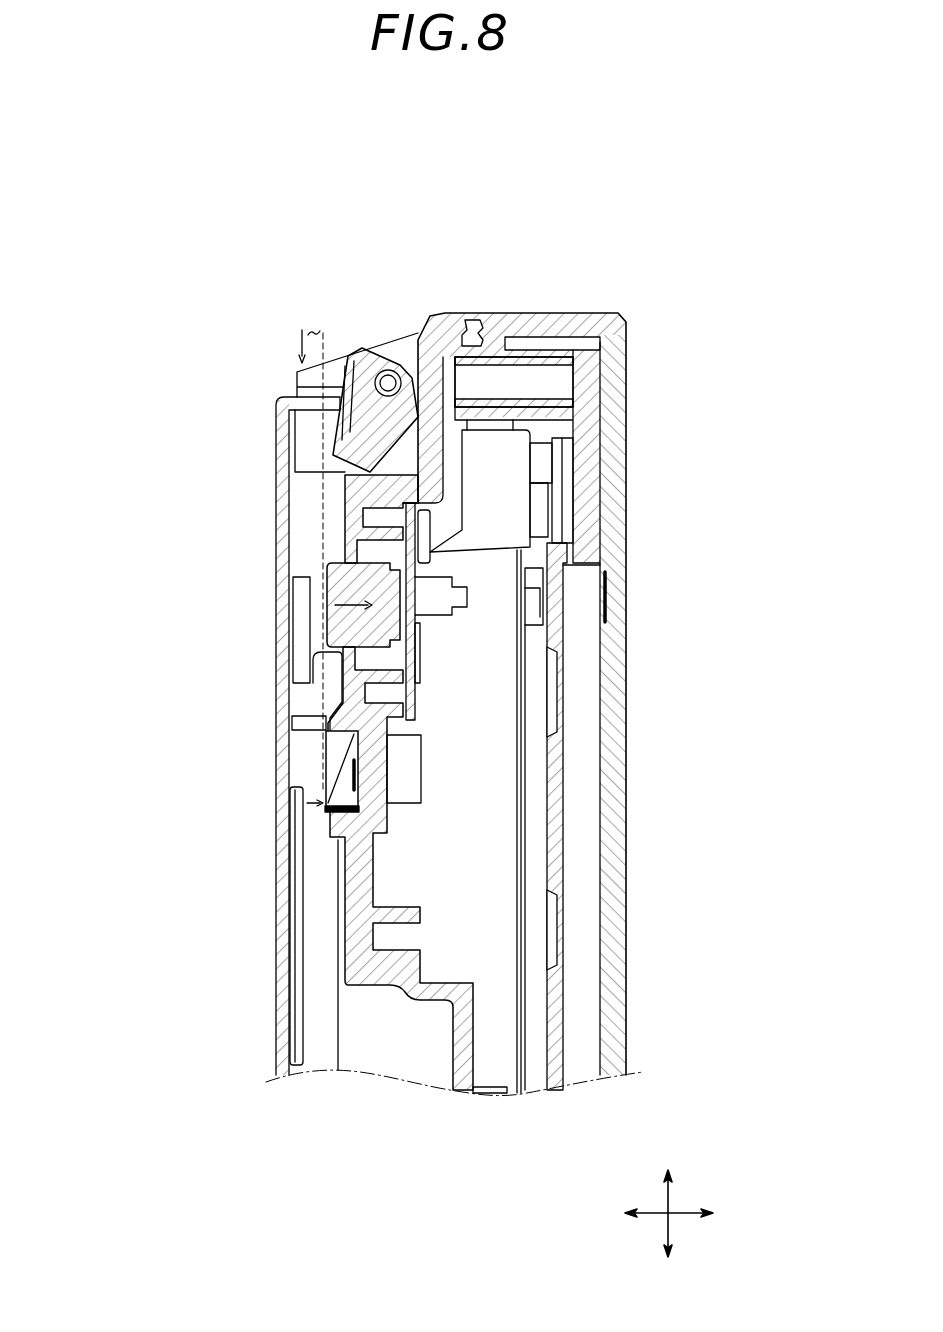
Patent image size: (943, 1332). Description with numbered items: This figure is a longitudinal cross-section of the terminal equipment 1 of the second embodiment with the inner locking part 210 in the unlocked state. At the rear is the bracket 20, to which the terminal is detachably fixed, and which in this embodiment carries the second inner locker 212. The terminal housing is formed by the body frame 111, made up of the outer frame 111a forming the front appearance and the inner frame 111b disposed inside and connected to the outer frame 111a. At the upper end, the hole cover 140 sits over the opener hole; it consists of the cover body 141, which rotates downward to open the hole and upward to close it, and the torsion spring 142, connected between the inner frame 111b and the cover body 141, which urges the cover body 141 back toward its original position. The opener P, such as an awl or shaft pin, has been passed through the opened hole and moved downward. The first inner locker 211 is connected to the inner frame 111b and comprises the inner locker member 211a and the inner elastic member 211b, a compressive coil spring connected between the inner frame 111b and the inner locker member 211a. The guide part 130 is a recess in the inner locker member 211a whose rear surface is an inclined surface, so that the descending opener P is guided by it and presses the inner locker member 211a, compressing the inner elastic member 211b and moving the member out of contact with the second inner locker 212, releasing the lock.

The terminal equipment 1 is at (444, 177).
The bracket 20 is at (289, 910).
The body frame 111 is at (637, 262).
The outer frame 111a is at (617, 357).
The inner frame 111b is at (450, 325).
The guide part 130 is at (325, 772).
The hole cover 140 is at (383, 293).
The cover body 141 is at (357, 355).
The torsion spring 142 is at (390, 370).
The inner locking part 210 is at (142, 653).
The first inner locker 211 is at (208, 695).
The inner locker member 211a is at (327, 740).
The inner elastic member 211b is at (337, 748).
The second inner locker 212 is at (300, 722).
The opener P is at (297, 372).